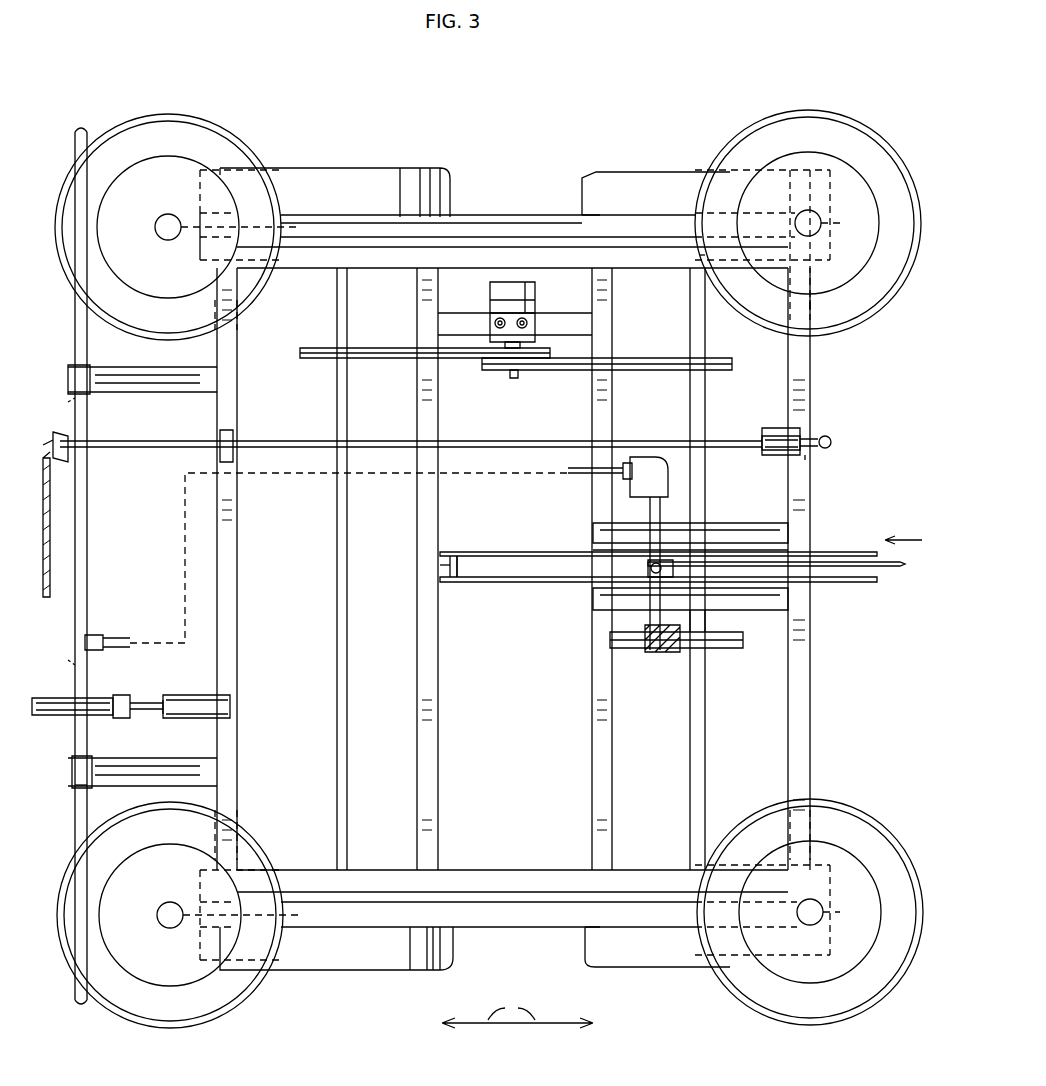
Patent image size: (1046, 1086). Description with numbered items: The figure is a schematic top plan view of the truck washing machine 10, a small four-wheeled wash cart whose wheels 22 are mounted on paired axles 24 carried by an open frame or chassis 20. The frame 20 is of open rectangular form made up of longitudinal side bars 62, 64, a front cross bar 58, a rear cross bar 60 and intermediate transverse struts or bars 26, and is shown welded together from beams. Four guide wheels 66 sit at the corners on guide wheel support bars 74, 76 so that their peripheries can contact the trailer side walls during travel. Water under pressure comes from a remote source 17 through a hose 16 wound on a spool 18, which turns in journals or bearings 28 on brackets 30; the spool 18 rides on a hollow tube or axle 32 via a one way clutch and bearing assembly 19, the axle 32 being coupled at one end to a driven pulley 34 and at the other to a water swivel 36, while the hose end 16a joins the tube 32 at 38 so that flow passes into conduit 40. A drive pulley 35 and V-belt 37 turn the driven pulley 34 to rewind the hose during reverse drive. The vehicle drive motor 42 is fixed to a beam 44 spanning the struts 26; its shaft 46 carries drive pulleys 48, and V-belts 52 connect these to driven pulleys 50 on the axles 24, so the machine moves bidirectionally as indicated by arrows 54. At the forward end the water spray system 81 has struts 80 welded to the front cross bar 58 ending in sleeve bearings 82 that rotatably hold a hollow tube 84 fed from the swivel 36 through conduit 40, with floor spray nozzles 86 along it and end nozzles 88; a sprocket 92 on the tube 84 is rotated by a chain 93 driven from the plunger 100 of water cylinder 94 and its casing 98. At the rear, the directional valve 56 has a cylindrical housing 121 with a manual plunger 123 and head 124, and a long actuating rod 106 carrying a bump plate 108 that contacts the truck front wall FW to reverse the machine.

The truck washing machine 10 is at (643, 126).
The hose 16 is at (883, 568).
The hose end 16a is at (600, 580).
The remote source of water under pressure 17 is at (910, 540).
The spool 18 is at (510, 606).
The one way clutch and bearing assembly 19 is at (658, 652).
The open frame or chassis 20 is at (832, 668).
The wheels 22 is at (438, 168).
The axles 24 is at (340, 800).
The intermediate transverse struts or bars 26 is at (440, 790).
The journals or bearings 28 is at (600, 535).
The brackets 30 is at (768, 523).
The hollow tube or axle 32 is at (665, 530).
The driven pulley 34 is at (622, 650).
The drive pulley 35 is at (745, 648).
The water swivel 36 is at (645, 457).
The V-belt 37 is at (712, 650).
The hose connection 38 is at (648, 565).
The conduit 40 is at (130, 642).
The vehicle drive motor 42 is at (537, 305).
The beam 44 is at (612, 322).
The motor shaft 46 is at (514, 380).
The drive pulleys 48 is at (500, 368).
The driven pulleys 50 is at (326, 360).
The V-belts 52 is at (392, 370).
The arrows 54 is at (517, 1007).
The 4-way directional valve 56 is at (759, 413).
The front cross bar 58 is at (240, 590).
The rear cross bar 60 is at (812, 740).
The longitudinal side bar 62 is at (382, 870).
The longitudinal side bar 64 is at (392, 268).
The guide wheels 66 is at (235, 150).
The guide wheel support bar 74 is at (545, 927).
The guide wheel support bar 76 is at (528, 213).
The struts 80 is at (122, 367).
The water spray system 81 is at (57, 802).
The sleeve bearings 82 is at (66, 368).
The hollow pipe or tube 84 is at (90, 630).
The floor spray nozzles 86 is at (68, 404).
The spray nozzles 88 is at (80, 125).
The sprocket 92 is at (60, 698).
The chain 93 is at (120, 695).
The water cylinder 94 is at (193, 683).
The cylindrical casing 98 is at (170, 695).
The plunger or piston rod 100 is at (140, 712).
The actuating rod 106 is at (522, 450).
The bump plate 108 is at (70, 470).
The cylindrical housing 121 is at (790, 430).
The plunger or handle 123 is at (808, 455).
The head 124 is at (832, 435).
The front wall FW is at (52, 505).